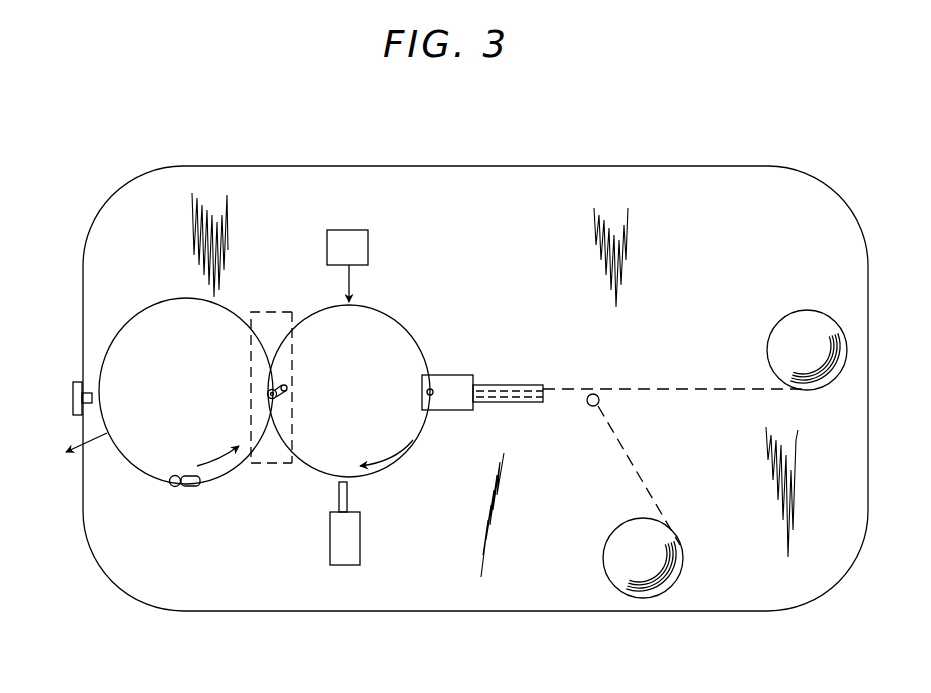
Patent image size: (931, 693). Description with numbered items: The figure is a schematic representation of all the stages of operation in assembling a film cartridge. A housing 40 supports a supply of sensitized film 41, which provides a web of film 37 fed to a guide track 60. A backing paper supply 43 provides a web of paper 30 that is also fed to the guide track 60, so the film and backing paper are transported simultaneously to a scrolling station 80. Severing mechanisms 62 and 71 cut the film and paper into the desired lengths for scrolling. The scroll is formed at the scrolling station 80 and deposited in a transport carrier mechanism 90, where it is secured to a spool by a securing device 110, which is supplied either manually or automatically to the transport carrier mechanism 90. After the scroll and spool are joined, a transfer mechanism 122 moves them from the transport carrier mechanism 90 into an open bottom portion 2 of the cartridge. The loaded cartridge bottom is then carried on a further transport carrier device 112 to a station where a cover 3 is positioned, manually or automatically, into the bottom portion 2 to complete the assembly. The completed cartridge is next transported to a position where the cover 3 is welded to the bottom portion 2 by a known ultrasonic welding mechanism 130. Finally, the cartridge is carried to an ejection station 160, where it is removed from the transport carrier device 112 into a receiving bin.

The housing 40 is at (636, 181).
The supply of sensitized film 41 is at (805, 322).
The backing paper supply 43 is at (677, 548).
The web of film 37 is at (686, 388).
The web of paper 30 is at (646, 484).
The severing mechanism 71 is at (488, 382).
The guide track 60 is at (525, 383).
The severing mechanism 62 is at (555, 384).
The scrolling station 80 is at (440, 411).
The transport carrier mechanism 90 is at (398, 458).
The securing device 110 is at (358, 540).
The transport carrier device 112 is at (250, 460).
The transfer mechanism 122 is at (294, 416).
The ultrasonic welding mechanism 130 is at (93, 384).
The ejection station 160 is at (80, 440).
The bottom portion 2 is at (280, 384).
The cover 3 is at (184, 487).